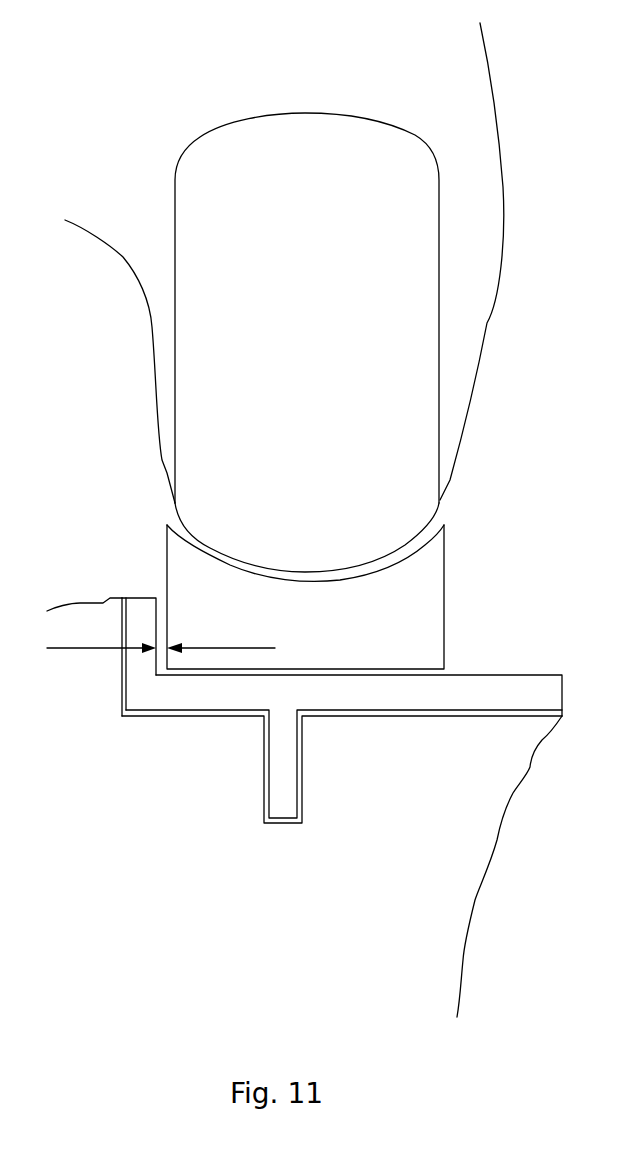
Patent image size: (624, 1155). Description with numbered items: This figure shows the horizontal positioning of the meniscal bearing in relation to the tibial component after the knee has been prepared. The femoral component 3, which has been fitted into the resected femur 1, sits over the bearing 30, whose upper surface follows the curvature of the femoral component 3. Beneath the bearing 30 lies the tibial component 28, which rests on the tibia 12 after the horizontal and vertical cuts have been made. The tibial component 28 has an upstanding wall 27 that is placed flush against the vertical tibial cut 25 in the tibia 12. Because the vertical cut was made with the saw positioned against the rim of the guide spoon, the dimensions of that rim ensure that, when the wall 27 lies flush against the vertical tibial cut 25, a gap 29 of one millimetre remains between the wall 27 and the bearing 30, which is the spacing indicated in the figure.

The femur 1 is at (463, 88).
The femoral component 3 is at (400, 331).
The tibia 12 is at (452, 893).
The vertical tibial cut 25 is at (124, 688).
The wall 27 is at (140, 597).
The tibial component 28 is at (197, 717).
The gap 29 is at (157, 575).
The bearing 30 is at (417, 607).